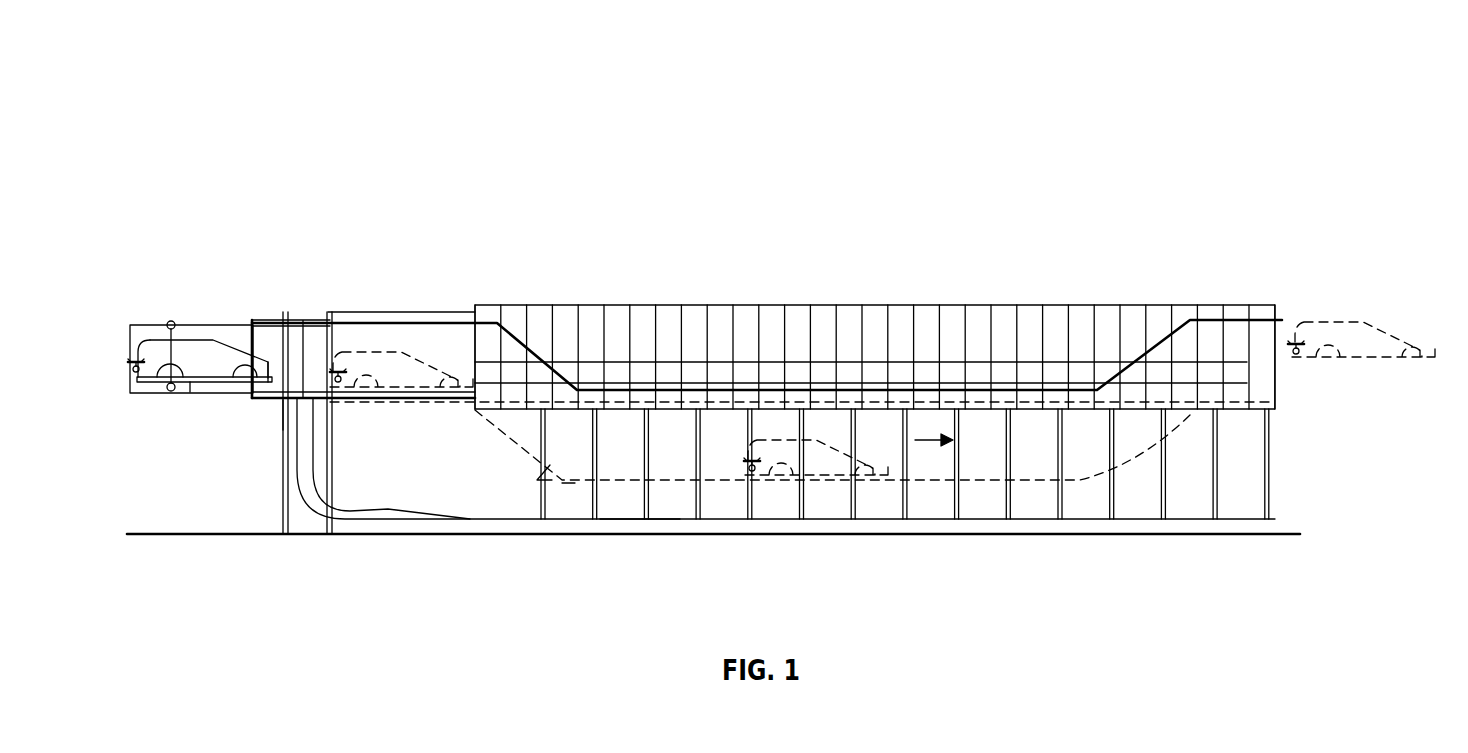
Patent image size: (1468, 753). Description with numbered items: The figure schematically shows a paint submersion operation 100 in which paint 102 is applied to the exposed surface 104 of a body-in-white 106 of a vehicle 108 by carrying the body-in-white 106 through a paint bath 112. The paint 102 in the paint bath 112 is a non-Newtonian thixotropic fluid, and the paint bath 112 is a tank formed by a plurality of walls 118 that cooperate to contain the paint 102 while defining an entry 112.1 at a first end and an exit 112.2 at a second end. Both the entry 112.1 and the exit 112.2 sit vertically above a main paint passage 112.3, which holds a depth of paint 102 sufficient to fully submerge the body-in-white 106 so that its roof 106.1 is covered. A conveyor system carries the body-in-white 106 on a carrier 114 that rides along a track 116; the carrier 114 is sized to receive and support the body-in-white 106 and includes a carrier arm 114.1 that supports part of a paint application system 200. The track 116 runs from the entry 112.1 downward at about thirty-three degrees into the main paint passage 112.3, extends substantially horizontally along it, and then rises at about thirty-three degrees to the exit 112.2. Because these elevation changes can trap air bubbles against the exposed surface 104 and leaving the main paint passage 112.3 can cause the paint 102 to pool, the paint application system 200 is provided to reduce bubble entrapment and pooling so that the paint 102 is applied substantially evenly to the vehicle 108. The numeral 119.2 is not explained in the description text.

The paint submersion operation 100 is at (165, 72).
The paint 102 is at (713, 472).
The exposed surface 104 is at (223, 362).
The body-in-white 106 is at (200, 328).
The roof 106.1 is at (223, 340).
The vehicle 108 is at (156, 284).
The paint bath 112 is at (870, 526).
The entry 112.1 is at (283, 430).
The exit 112.2 is at (1338, 320).
The main paint passage 112.3 is at (638, 508).
The carrier 114 is at (165, 383).
The carrier arm 114.1 is at (142, 343).
The track 116 is at (393, 513).
The walls 118 is at (301, 482).
The platform base 119.2 is at (195, 385).
The paint application system 200 is at (133, 368).